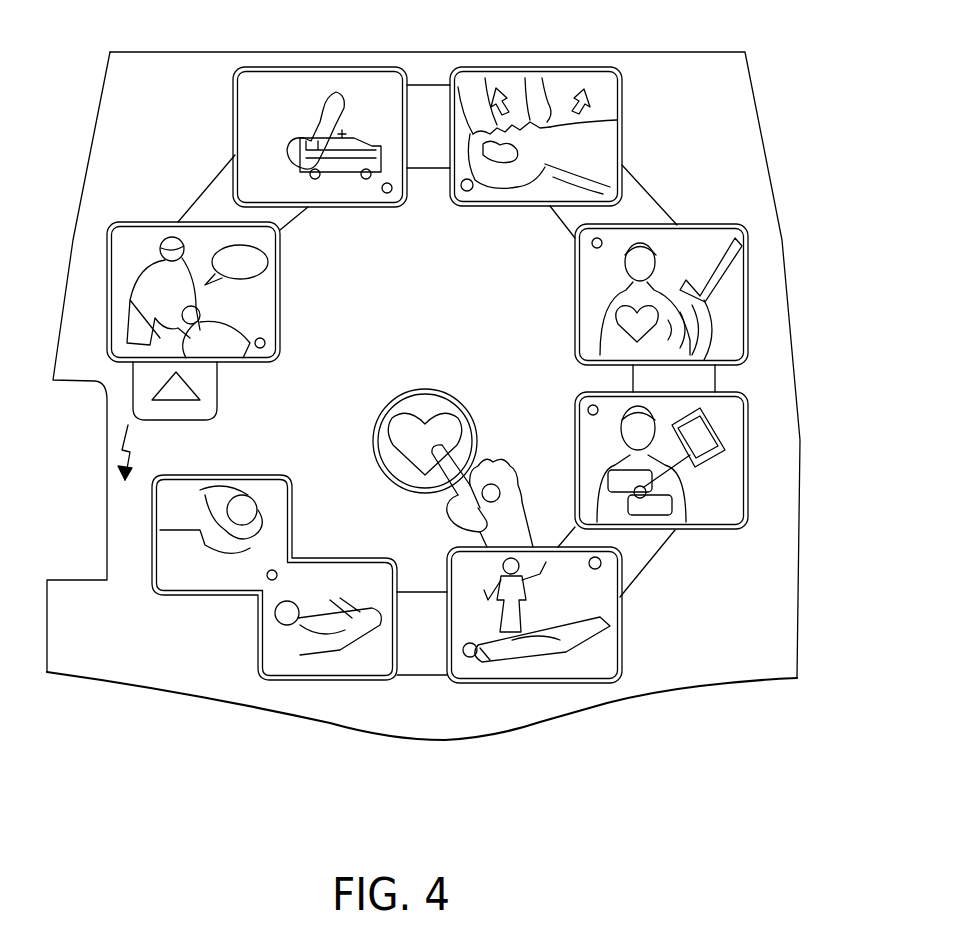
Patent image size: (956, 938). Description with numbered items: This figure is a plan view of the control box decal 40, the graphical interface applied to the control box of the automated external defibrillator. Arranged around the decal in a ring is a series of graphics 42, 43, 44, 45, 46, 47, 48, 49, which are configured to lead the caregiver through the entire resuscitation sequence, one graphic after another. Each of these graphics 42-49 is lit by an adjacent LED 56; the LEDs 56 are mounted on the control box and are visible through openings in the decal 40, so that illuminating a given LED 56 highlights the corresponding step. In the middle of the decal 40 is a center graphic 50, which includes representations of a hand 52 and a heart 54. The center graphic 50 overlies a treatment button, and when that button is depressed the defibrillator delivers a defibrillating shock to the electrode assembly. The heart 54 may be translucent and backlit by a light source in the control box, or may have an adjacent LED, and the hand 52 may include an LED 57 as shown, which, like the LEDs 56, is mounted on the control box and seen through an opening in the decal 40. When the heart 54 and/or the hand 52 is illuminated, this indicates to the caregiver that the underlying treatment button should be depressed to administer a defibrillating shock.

The control box decal 40 is at (777, 91).
The graphic 42 is at (123, 242).
The graphic 43 is at (278, 83).
The graphic 44 is at (599, 88).
The graphic 45 is at (725, 290).
The graphic 46 is at (733, 470).
The graphic 47 is at (587, 656).
The graphic 48 is at (257, 677).
The graphic 49 is at (153, 487).
The center graphic 50 is at (387, 502).
The hand 52 is at (485, 545).
The heart 54 is at (403, 493).
The LED 56 is at (389, 183).
The LED 57 is at (501, 493).